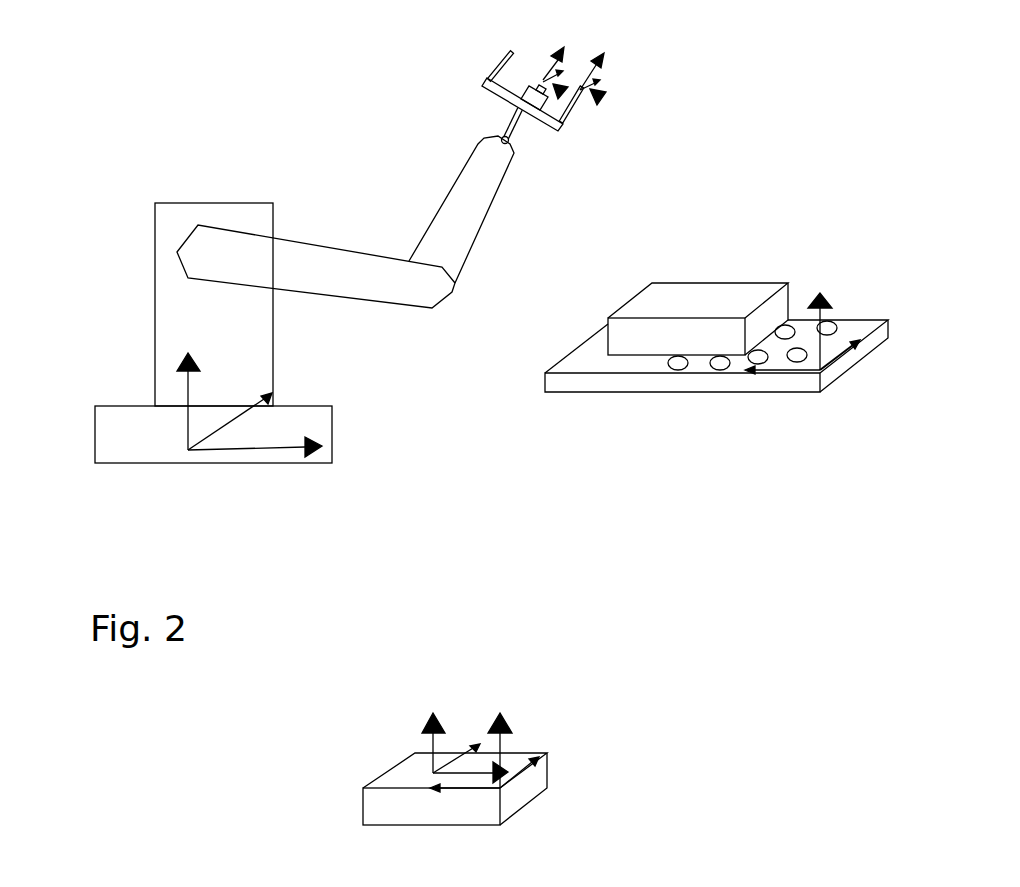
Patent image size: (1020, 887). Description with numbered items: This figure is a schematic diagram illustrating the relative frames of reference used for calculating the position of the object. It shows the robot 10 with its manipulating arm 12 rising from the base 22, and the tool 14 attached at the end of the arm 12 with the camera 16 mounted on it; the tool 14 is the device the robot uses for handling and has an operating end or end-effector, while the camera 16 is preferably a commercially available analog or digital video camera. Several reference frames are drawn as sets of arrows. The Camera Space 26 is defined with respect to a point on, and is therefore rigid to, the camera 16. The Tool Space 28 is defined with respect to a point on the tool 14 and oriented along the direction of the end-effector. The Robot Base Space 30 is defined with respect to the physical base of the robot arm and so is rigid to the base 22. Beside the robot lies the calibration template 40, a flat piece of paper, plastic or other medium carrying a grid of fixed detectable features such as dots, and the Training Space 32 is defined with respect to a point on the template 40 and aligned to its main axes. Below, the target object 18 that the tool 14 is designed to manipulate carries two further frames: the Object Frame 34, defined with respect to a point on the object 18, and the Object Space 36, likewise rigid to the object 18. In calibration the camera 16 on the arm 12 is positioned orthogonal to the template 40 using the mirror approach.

The robot 10 is at (152, 304).
The manipulating arm 12 is at (345, 222).
The tool 14 is at (571, 121).
The camera 16 is at (475, 62).
The target object 18 is at (409, 809).
The base 22 is at (188, 463).
The camera space 26 is at (575, 62).
The tool space 28 is at (659, 79).
The robot base space 30 is at (309, 424).
The training space 32 is at (819, 362).
The object frame 34 is at (425, 744).
The object space 36 is at (538, 762).
The calibration template 40 is at (683, 337).